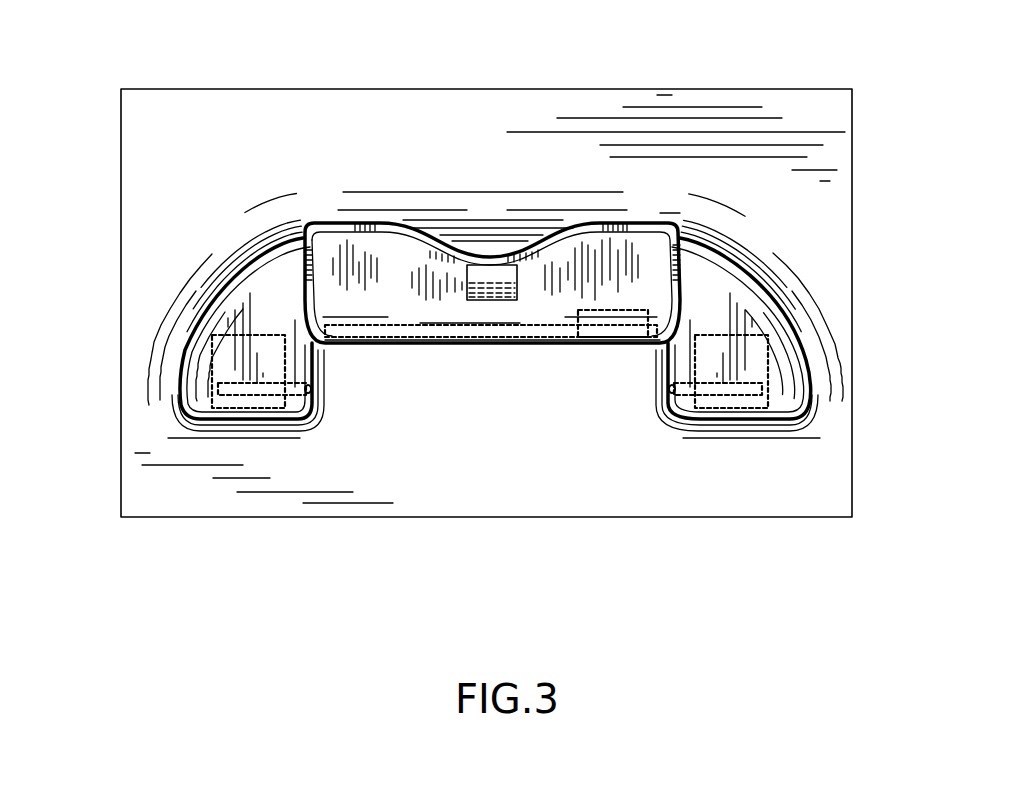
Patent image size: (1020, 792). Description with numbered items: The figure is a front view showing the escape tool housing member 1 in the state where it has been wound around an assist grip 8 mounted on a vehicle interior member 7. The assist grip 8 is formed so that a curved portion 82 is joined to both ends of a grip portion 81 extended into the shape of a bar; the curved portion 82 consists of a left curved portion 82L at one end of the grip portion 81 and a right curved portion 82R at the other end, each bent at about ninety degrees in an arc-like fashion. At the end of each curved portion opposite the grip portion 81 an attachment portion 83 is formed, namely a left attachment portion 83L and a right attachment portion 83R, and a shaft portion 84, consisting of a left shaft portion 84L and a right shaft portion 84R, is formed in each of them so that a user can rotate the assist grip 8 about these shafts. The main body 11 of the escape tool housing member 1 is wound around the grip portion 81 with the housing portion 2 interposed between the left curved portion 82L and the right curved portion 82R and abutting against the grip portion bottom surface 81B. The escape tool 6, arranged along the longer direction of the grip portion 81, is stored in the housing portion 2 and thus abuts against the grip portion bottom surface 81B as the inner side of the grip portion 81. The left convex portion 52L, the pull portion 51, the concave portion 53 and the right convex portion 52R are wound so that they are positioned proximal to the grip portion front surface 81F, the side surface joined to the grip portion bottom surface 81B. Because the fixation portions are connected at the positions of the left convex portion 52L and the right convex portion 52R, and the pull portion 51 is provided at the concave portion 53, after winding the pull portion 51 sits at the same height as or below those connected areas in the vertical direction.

The escape tool housing member 1 is at (327, 228).
The housing portion 2 is at (605, 343).
The escape tool 6 is at (508, 343).
The vehicle interior member 7 is at (460, 487).
The assist grip 8 is at (298, 228).
The main body 11 is at (433, 227).
The pull portion 51 is at (487, 295).
The left convex portion 52L is at (346, 222).
The right convex portion 52R is at (645, 220).
The concave portion 53 is at (507, 260).
The grip portion 81 is at (472, 253).
The grip portion front surface 81F is at (528, 290).
The grip portion bottom surface 81B is at (530, 343).
The curved portion 82 is at (488, 313).
The left curved portion 82L is at (223, 285).
The right curved portion 82R is at (753, 285).
The attachment portion 83 is at (516, 464).
The left attachment portion 83L is at (240, 413).
The right attachment portion 83R is at (742, 413).
The shaft portion 84 is at (497, 488).
The left shaft portion 84L is at (313, 405).
The right shaft portion 84R is at (668, 393).